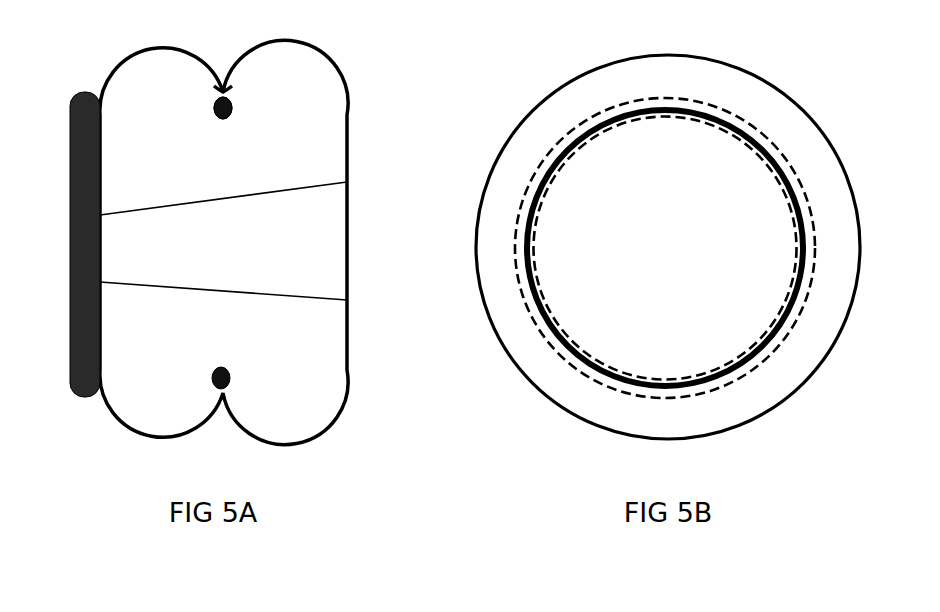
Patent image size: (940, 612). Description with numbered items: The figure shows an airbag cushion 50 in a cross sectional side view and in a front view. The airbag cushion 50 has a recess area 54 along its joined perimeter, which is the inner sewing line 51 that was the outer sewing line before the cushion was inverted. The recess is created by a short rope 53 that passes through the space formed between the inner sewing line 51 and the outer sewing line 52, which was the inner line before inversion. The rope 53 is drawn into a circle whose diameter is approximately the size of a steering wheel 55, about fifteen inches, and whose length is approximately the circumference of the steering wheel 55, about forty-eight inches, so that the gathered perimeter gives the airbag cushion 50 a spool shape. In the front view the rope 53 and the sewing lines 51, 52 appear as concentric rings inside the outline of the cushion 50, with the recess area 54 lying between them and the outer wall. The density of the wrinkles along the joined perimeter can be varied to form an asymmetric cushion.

In FIG. 5A, the airbag cushion 50 is at (322, 65).
In FIG. 5B, the airbag cushion 50 is at (792, 100).
In FIG. 5A, the inner sewing line 51 is at (230, 120).
In FIG. 5B, the inner sewing line 51 is at (672, 117).
In FIG. 5A, the outer sewing line 52 is at (226, 95).
In FIG. 5B, the outer sewing line 52 is at (700, 100).
In FIG. 5A, the rope 53 is at (233, 105).
In FIG. 5B, the rope 53 is at (772, 165).
In FIG. 5A, the recess area 54 is at (220, 422).
In FIG. 5B, the recess area 54 is at (645, 410).
In FIG. 5A, the steering wheel 55 is at (100, 327).